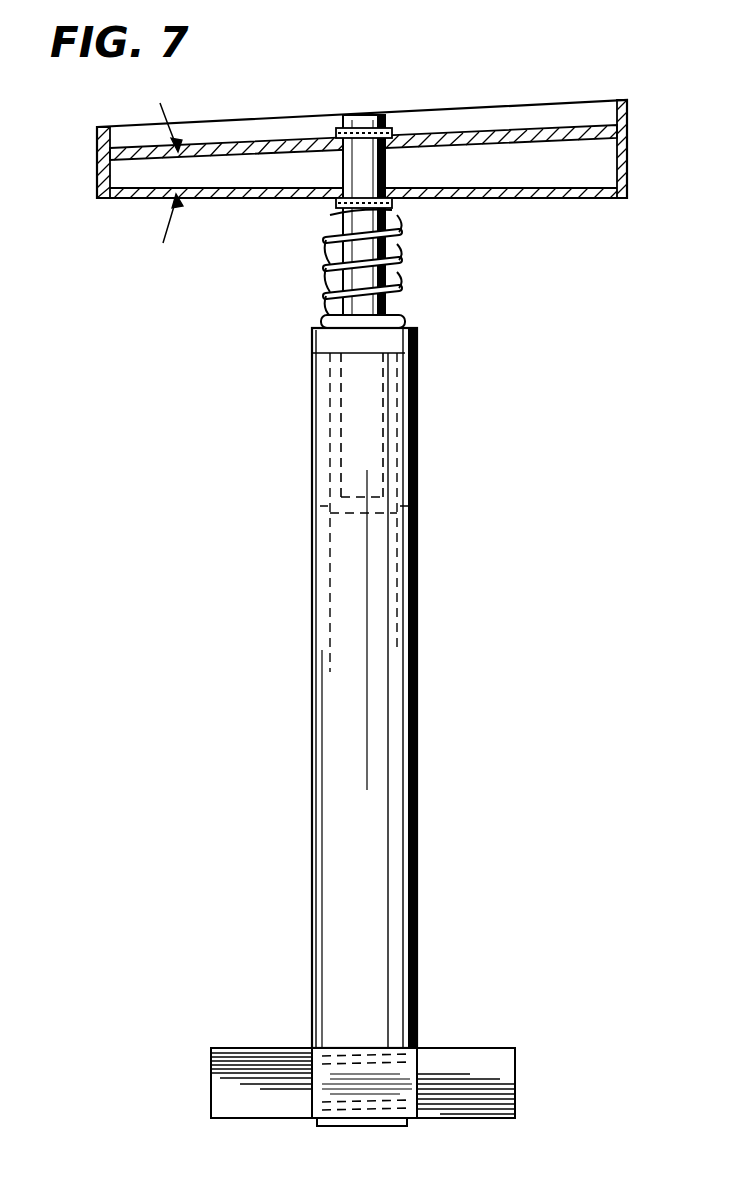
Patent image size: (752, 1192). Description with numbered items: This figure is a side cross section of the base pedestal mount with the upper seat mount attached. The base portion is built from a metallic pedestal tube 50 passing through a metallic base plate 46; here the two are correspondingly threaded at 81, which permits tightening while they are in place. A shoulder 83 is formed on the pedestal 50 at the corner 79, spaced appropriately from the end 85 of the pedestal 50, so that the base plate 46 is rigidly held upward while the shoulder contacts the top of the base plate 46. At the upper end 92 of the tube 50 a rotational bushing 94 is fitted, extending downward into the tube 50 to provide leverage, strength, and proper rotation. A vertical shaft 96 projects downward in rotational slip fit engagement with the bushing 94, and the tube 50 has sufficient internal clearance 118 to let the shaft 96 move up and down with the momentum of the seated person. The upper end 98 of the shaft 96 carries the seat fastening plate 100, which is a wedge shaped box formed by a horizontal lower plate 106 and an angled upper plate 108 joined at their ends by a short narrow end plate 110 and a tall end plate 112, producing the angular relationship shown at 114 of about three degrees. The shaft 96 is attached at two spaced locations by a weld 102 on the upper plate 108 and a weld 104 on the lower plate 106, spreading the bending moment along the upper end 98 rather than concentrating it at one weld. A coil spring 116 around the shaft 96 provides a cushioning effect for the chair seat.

The base plate 46 is at (515, 1066).
The pedestal tube 50 is at (350, 684).
The corner 79 is at (312, 1048).
The threads 81 is at (318, 1108).
The shoulder 83 is at (410, 1062).
The end of pedestal 85 is at (398, 1126).
The upper end of tube 92 is at (312, 353).
The rotational bushing 94 is at (418, 337).
The vertical shaft 96 is at (322, 318).
The upper end of shaft 98 is at (340, 155).
The seat fastening plate 100 is at (592, 98).
The weld 102 is at (386, 130).
The weld 104 is at (336, 206).
The horizontal lower plate 106 is at (572, 200).
The angled upper plate 108 is at (628, 124).
The short narrow end plate 110 is at (97, 168).
The tall end plate 112 is at (630, 172).
The angular relationship 114 is at (178, 176).
The coil spring 116 is at (405, 287).
The internal clearance 118 is at (330, 498).